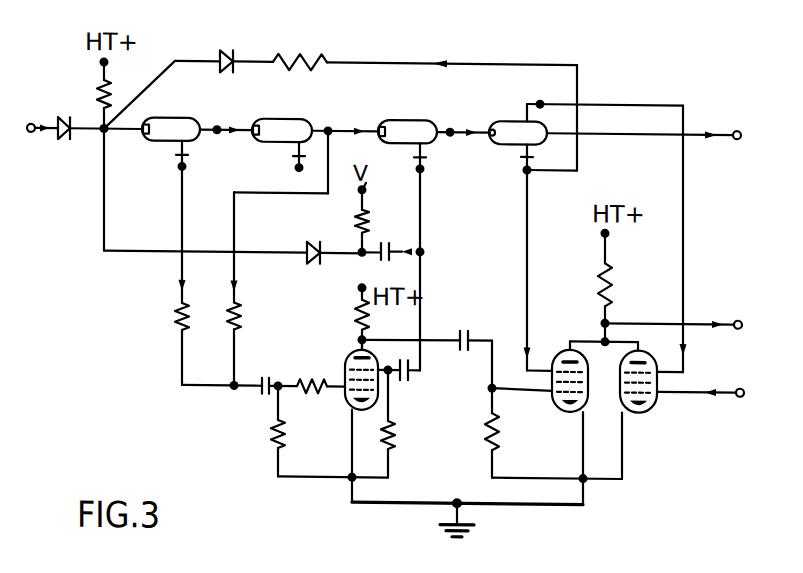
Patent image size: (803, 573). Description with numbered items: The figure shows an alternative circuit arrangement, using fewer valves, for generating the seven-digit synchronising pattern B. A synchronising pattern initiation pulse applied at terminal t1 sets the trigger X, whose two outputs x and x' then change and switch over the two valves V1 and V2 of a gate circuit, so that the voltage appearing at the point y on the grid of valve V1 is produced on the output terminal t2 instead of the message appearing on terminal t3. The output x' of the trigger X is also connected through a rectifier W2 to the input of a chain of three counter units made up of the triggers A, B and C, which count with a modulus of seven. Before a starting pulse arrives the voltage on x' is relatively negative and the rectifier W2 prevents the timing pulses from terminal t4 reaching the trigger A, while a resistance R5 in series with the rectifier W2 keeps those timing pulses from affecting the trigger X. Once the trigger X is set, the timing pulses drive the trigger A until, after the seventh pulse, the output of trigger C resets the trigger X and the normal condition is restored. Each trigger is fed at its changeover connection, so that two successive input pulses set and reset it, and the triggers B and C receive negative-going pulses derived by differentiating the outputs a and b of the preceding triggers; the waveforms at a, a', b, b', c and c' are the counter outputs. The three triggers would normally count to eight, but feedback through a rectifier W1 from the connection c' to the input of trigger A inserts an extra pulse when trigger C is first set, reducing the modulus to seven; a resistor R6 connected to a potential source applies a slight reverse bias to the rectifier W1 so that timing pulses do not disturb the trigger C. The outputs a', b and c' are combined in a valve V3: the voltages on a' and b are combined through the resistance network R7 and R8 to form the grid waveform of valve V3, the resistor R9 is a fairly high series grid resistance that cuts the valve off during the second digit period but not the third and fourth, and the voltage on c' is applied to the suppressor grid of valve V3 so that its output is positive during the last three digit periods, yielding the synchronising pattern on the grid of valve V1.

The trigger A is at (172, 116).
The trigger B is at (290, 116).
The trigger C is at (415, 116).
The trigger X is at (503, 116).
The output connection a is at (217, 113).
The output connection b is at (329, 114).
The output connection c is at (450, 116).
The output x is at (605, 92).
The output connection a' is at (172, 172).
The output connection b' is at (290, 173).
The output connection c' is at (431, 174).
The output x' is at (519, 177).
The point y is at (494, 380).
The resistance R5 is at (300, 44).
The resistor R6 is at (383, 224).
The resistance R7 is at (159, 321).
The resistance R8 is at (255, 322).
The resistor R9 is at (316, 373).
The rectifier W1 is at (318, 269).
The rectifier W2 is at (231, 44).
The valve V1 is at (556, 397).
The valve V2 is at (654, 397).
The valve V3 is at (381, 397).
The terminal t1 is at (731, 116).
The output terminal t2 is at (679, 304).
The terminal t3 is at (704, 377).
The terminal t4 is at (38, 111).